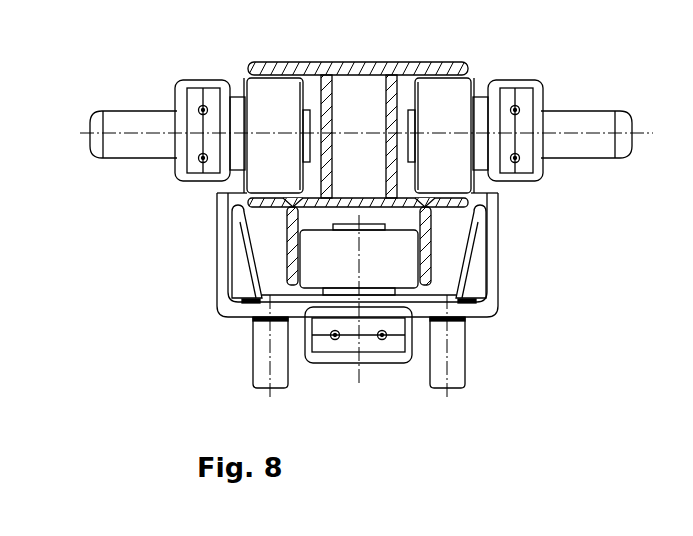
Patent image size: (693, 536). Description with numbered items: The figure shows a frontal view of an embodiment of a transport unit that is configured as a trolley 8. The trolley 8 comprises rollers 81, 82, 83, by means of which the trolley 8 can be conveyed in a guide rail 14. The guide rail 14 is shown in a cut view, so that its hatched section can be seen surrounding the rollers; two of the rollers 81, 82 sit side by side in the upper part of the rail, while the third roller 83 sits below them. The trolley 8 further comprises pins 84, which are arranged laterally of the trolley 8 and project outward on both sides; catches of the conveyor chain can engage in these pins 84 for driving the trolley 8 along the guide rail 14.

The trolley 8 is at (583, 302).
The guide rail 14 is at (425, 67).
The roller 81 is at (457, 100).
The roller 82 is at (272, 102).
The roller 83 is at (336, 274).
The pins 84 is at (128, 120).